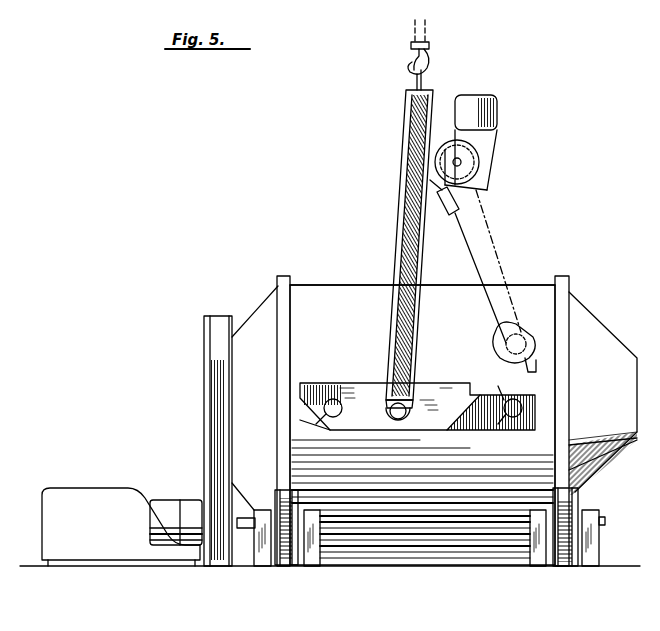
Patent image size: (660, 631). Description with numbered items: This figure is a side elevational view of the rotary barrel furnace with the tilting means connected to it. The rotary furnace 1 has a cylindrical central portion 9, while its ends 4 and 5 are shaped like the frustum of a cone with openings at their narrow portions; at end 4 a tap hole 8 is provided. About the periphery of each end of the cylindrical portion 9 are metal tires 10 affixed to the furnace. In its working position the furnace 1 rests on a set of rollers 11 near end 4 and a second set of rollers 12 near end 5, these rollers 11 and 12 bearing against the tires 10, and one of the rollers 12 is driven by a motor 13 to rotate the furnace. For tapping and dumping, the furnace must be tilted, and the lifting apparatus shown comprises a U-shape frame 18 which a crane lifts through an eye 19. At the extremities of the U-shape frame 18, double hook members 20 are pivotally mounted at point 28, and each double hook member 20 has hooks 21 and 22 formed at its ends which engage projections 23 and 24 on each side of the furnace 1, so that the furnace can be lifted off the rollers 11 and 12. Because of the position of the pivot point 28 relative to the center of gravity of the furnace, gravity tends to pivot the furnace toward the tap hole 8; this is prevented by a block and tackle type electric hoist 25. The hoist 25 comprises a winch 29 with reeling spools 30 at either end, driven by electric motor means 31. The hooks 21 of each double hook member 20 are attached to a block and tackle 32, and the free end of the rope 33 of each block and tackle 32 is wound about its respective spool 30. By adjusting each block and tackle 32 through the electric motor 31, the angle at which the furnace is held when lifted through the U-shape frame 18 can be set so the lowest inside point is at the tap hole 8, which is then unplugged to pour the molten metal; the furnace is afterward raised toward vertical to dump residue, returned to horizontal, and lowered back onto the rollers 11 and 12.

The rotary furnace 1 is at (538, 268).
The end 4 is at (592, 324).
The end 5 is at (258, 313).
The tap hole 8 is at (608, 488).
The central portion 9 is at (443, 286).
The metal tires 10 is at (286, 281).
The set of rollers 11 is at (568, 548).
The second set of rollers 12 is at (290, 548).
The motor 13 is at (118, 530).
The U-shape frame 18 is at (410, 210).
The eye 19 is at (430, 72).
The double hook members 20 is at (440, 385).
The hooks 21 is at (506, 420).
The hooks 22 is at (330, 428).
The projections 23 is at (504, 398).
The projections 24 is at (336, 398).
The block and tackle type electric hoist 25 is at (490, 141).
The point 28 is at (389, 413).
The winch 29 is at (463, 162).
The reeling spools 30 is at (476, 172).
The electric motor means 31 is at (492, 115).
The block and tackle 32 is at (497, 342).
The rope 33 is at (503, 243).